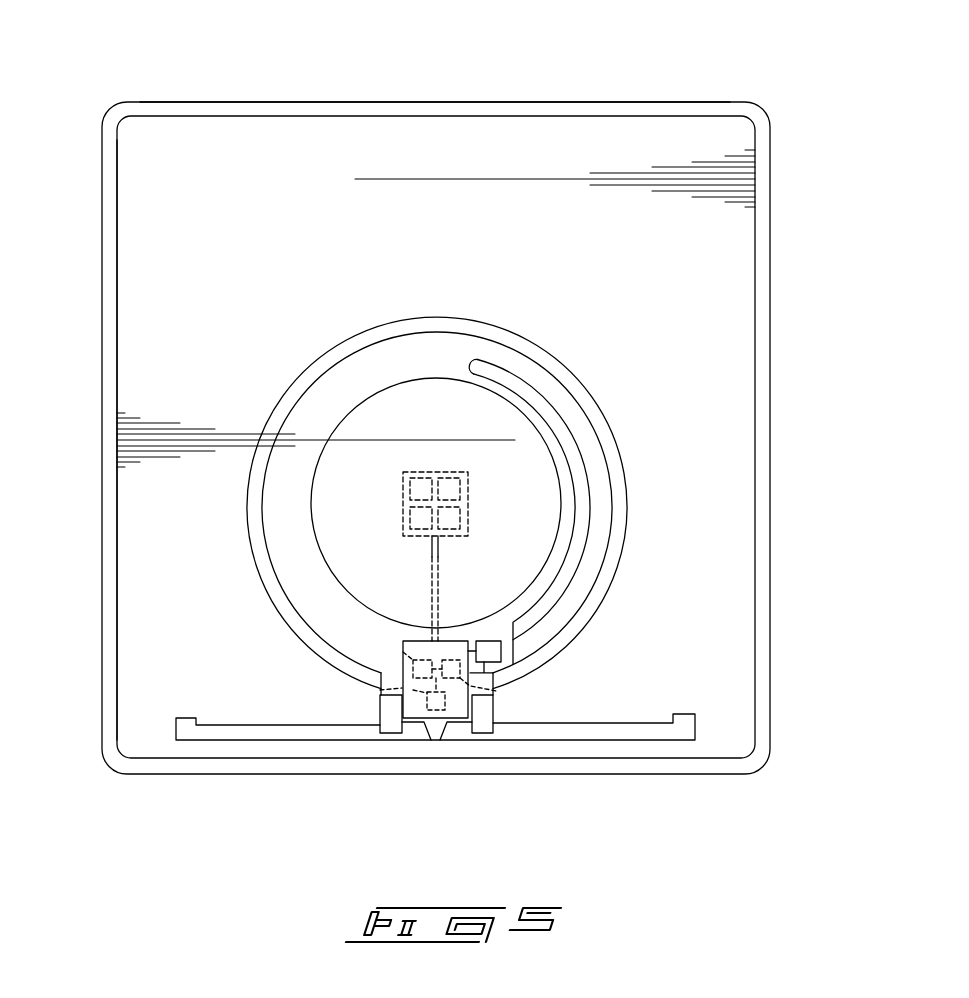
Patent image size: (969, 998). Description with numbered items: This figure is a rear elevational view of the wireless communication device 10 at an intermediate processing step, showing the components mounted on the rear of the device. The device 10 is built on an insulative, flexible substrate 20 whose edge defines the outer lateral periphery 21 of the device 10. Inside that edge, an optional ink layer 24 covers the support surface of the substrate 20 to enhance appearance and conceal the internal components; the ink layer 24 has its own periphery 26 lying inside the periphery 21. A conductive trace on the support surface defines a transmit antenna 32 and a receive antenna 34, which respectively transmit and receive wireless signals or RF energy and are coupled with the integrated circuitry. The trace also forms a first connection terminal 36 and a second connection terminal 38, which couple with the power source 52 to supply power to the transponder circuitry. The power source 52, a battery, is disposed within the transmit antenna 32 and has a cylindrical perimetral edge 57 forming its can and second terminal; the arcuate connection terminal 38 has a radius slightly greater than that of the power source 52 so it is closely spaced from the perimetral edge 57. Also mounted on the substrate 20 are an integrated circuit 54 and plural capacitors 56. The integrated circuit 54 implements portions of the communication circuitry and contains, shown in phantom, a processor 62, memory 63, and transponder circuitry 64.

The wireless communication device 10 is at (750, 44).
The substrate 20 is at (225, 100).
The outer lateral periphery 21 is at (362, 102).
The ink layer 24 is at (564, 113).
The periphery 26 is at (118, 300).
The transmit antenna 32 is at (567, 355).
The receive antenna 34 is at (258, 745).
The first connection terminal 36 is at (470, 491).
The second connection terminal 38 is at (571, 427).
The power source 52 is at (401, 381).
The integrated circuit 54 is at (435, 744).
The capacitors 56 is at (487, 648).
The perimetral edge 57 is at (313, 545).
The processor 62 is at (408, 656).
The memory 63 is at (497, 691).
The transponder circuitry 64 is at (380, 690).